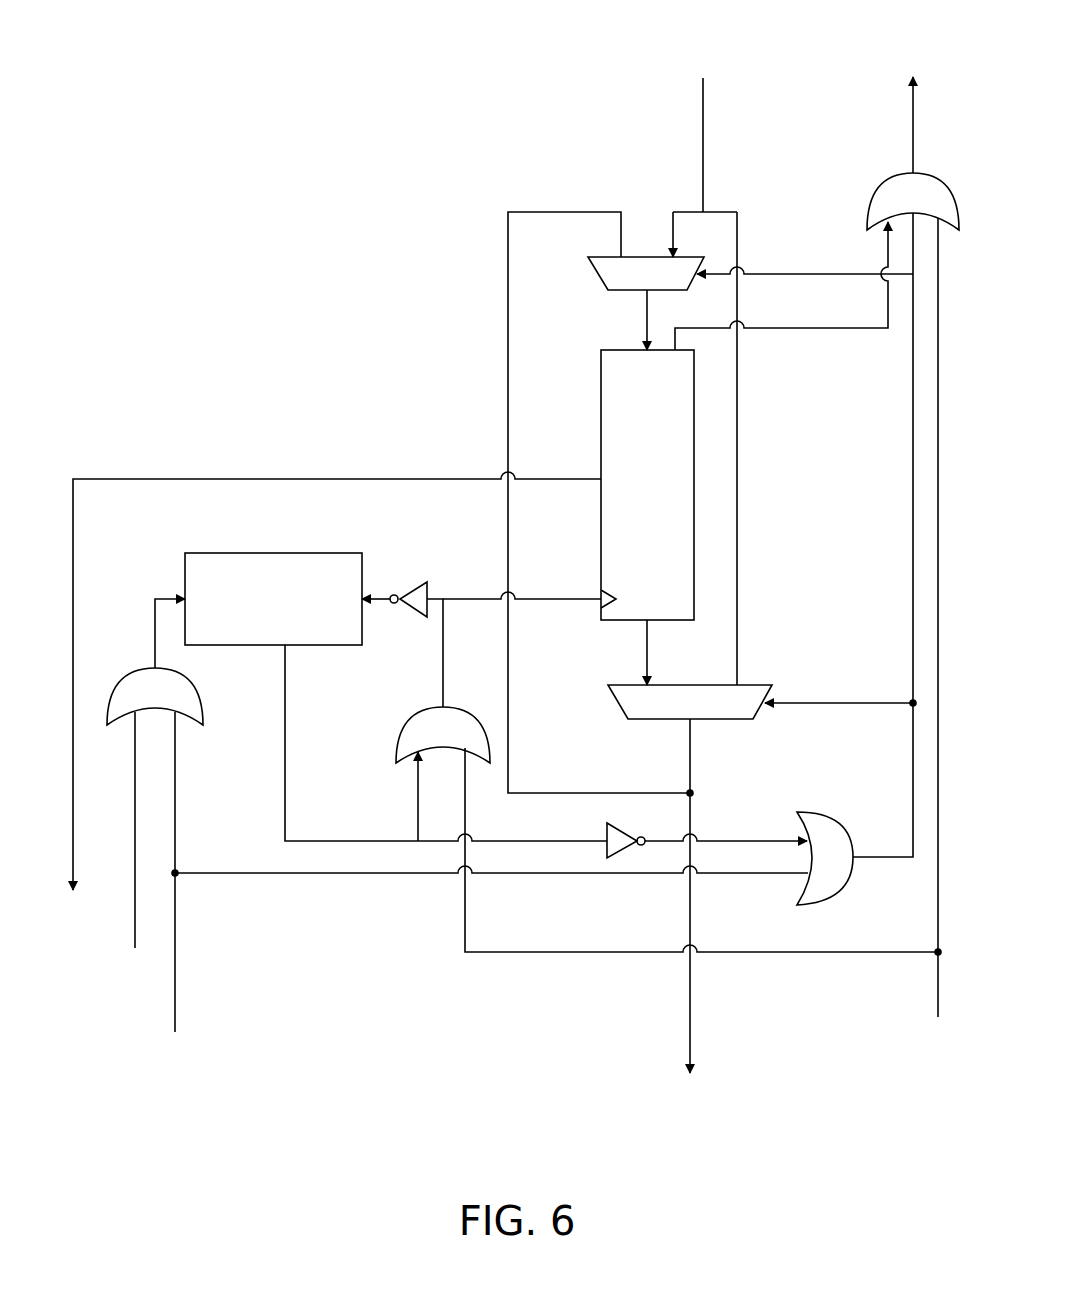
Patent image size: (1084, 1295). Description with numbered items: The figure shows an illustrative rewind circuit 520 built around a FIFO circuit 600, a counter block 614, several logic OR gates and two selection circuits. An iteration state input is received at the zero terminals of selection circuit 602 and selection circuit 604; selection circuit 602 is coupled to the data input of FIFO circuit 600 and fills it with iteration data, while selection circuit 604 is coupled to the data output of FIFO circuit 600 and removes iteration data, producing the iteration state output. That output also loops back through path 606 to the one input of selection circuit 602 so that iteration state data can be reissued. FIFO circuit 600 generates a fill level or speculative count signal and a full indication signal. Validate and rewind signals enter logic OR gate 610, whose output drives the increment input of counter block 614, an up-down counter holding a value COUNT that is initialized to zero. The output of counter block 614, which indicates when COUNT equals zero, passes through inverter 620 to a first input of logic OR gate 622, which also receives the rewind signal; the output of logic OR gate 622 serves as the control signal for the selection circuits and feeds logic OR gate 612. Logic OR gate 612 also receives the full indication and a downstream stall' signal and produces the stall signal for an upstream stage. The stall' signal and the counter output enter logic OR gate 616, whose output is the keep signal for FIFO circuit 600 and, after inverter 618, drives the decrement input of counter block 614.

The rewind circuit 520 is at (268, 88).
The FIFO circuit 600 is at (601, 445).
The selection circuit 602 is at (598, 275).
The selection circuit 604 is at (618, 702).
The path 606 is at (563, 212).
The logic OR gate 610 is at (140, 670).
The logic OR gate 612 is at (888, 184).
The counter block 614 is at (330, 553).
The logic OR gate 616 is at (418, 715).
The inverter 618 is at (415, 582).
The inverter 620 is at (605, 835).
The logic OR gate 622 is at (828, 815).